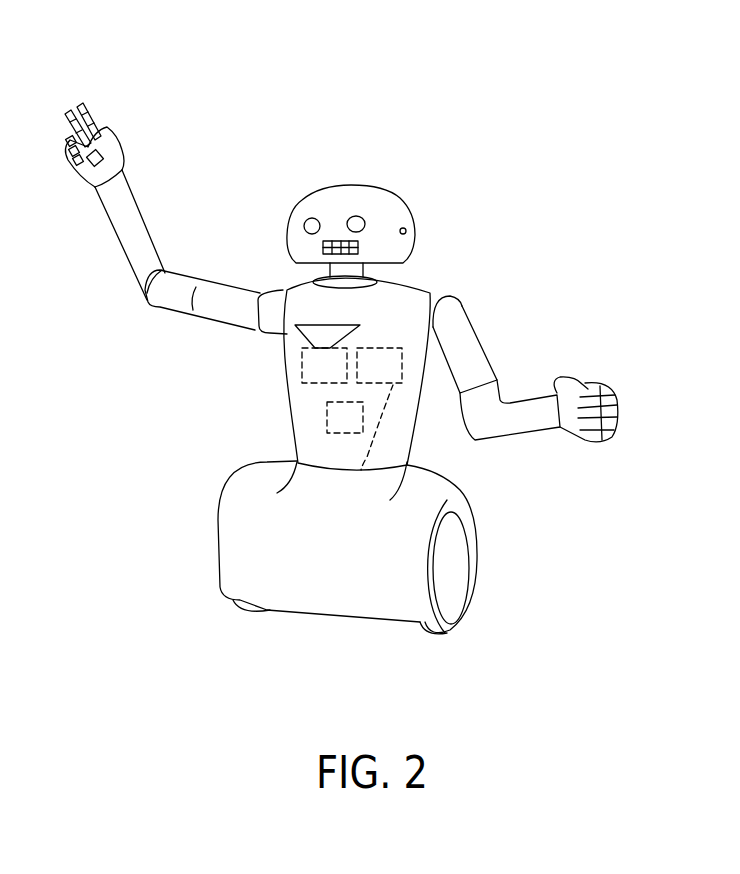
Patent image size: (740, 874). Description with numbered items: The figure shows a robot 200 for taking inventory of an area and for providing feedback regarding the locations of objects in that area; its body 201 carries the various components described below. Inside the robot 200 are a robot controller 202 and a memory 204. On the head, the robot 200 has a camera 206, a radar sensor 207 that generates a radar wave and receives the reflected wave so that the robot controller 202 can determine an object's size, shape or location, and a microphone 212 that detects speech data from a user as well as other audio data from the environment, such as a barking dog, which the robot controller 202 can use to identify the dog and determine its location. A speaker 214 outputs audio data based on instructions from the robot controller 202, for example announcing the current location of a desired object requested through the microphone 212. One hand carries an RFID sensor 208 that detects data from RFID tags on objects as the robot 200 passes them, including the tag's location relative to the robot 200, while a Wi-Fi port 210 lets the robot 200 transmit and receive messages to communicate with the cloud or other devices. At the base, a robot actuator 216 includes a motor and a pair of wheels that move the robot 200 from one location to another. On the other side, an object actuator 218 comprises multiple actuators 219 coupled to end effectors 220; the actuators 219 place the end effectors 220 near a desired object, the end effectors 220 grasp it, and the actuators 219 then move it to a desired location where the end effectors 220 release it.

The robot 200 is at (369, 99).
The torso 201 is at (412, 290).
The robot controller 202 is at (300, 366).
The memory 204 is at (361, 470).
The camera 206 is at (305, 227).
The radar sensor 207 is at (360, 216).
The RFID sensor 208 is at (98, 145).
The Wi-Fi port 210 is at (322, 421).
The microphone 212 is at (410, 229).
The speaker 214 is at (320, 249).
The robot actuator 216 is at (437, 633).
The object actuator 218 is at (615, 412).
The multiple actuators 219 is at (498, 335).
The end effectors 220 is at (598, 438).